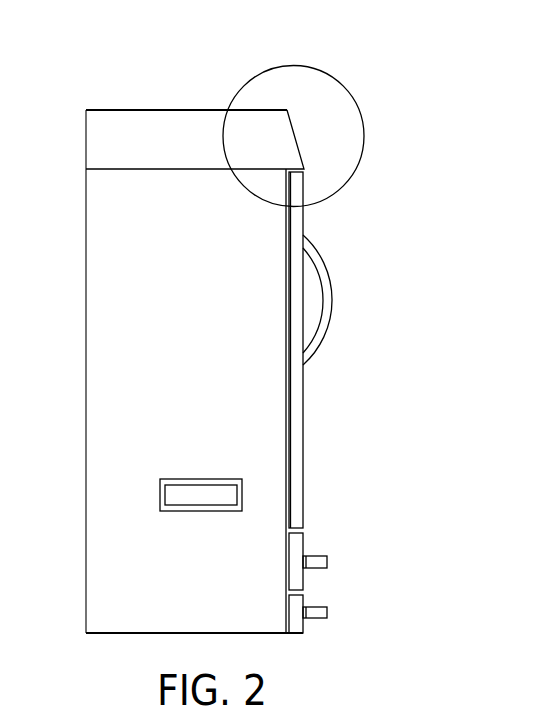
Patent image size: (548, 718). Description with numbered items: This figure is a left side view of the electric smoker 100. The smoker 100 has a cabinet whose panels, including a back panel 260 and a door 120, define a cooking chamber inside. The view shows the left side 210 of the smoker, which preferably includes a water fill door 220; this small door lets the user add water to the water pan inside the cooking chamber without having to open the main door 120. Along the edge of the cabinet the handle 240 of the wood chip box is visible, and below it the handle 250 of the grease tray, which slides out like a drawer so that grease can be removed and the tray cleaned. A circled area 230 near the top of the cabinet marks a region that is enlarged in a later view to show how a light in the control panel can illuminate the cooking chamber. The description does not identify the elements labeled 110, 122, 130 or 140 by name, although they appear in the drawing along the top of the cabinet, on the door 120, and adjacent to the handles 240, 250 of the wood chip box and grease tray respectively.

The smoker 100 is at (83, 85).
The top portion 110 is at (195, 110).
The door 120 is at (302, 214).
The handle 122 is at (322, 345).
The first connector housing 130 is at (302, 550).
The second connector housing 140 is at (305, 605).
The left side 210 is at (176, 308).
The water fill door 220 is at (200, 479).
The area 230 is at (347, 88).
The handle 240 is at (327, 562).
The handle 250 is at (327, 612).
The back panel 260 is at (86, 308).